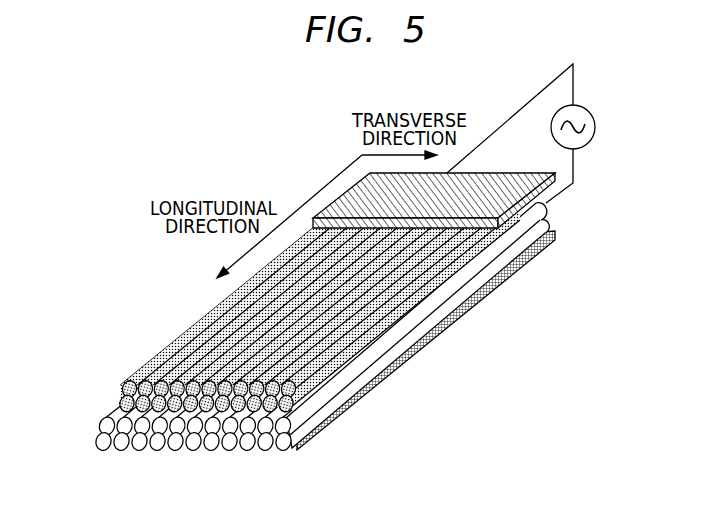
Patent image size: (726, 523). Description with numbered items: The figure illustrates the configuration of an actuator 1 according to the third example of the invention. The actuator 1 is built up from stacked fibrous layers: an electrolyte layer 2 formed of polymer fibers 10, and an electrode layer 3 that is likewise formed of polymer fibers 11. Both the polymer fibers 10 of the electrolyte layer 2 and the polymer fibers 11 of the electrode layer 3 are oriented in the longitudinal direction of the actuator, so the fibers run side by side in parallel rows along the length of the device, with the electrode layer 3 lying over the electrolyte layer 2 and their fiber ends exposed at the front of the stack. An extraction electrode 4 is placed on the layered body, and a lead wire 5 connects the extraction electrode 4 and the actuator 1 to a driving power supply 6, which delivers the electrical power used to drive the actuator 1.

The actuator 1 is at (250, 148).
The electrolyte layer 2 is at (88, 422).
The electrode layer 3 is at (293, 310).
The extraction electrode 4 is at (353, 183).
The lead wire 5 is at (524, 106).
The driving power supply 6 is at (595, 127).
The polymer fibers of the electrolyte layer 10 is at (287, 449).
The polymer fibers of the electrode layer 11 is at (160, 353).